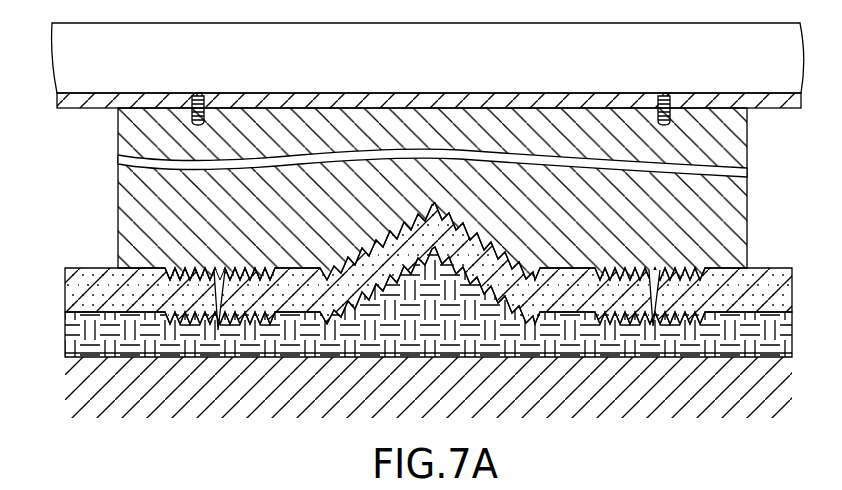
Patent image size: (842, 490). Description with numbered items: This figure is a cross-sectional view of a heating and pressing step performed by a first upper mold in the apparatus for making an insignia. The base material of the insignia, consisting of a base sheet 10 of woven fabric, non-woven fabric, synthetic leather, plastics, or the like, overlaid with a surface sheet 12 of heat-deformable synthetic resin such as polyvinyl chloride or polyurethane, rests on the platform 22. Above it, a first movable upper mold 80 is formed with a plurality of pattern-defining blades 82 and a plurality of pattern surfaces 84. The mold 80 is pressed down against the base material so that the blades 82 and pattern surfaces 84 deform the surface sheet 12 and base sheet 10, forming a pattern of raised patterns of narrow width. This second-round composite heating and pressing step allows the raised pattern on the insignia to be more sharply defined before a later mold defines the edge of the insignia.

The first movable upper mold 80 is at (730, 250).
The pattern-defining blades 82 is at (215, 272).
The pattern surfaces 84 is at (176, 270).
The surface sheet 12 is at (95, 288).
The base sheet 10 is at (93, 347).
The platform 22 is at (220, 373).